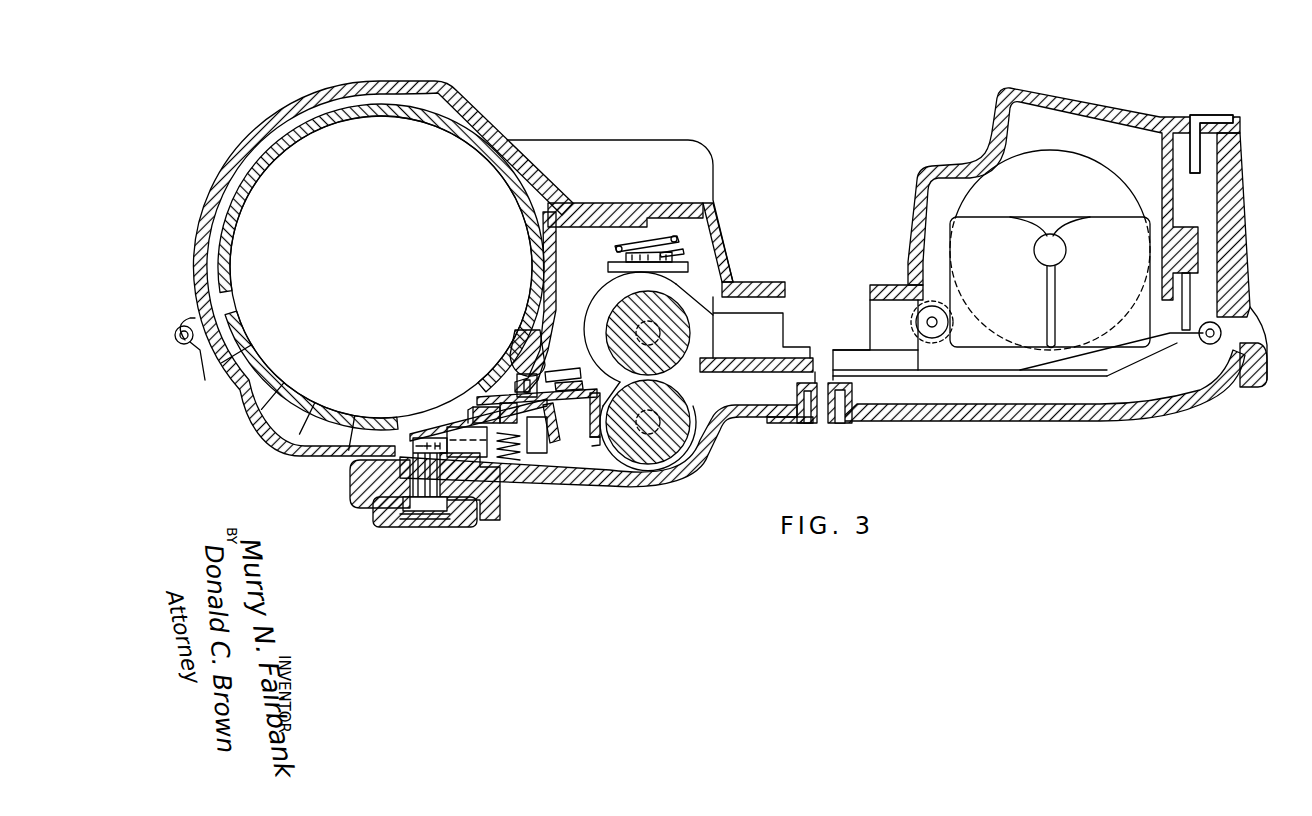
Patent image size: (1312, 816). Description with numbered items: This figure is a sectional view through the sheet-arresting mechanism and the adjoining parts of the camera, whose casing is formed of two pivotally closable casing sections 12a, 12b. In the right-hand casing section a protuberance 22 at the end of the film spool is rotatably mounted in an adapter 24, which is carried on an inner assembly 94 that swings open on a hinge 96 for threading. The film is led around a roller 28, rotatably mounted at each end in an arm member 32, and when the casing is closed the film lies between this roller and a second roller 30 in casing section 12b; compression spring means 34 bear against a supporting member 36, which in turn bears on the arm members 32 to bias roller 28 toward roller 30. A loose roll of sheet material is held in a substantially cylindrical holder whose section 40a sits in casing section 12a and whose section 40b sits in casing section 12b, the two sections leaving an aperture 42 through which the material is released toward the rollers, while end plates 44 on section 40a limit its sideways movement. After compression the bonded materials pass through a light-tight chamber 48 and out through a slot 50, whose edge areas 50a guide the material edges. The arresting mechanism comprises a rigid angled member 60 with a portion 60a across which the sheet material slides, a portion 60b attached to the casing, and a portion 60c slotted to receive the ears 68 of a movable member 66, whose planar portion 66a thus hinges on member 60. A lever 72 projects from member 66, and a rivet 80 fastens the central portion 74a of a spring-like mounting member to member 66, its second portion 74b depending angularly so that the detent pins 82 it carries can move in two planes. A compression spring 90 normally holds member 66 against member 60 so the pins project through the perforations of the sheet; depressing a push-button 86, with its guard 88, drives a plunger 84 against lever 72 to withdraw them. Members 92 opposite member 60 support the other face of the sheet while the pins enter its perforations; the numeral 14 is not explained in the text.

The casing section 12a is at (440, 86).
The casing section 12b is at (707, 452).
The hinge 14 is at (185, 326).
The protuberance 22 is at (1052, 234).
The adapter 24 is at (1109, 273).
The roller 28 is at (628, 314).
The roller 30 is at (680, 400).
The arm member 32 is at (608, 292).
The compression spring means 34 is at (614, 246).
The supporting member 36 is at (689, 267).
The holder section 40a is at (321, 124).
The holder section 40b is at (268, 426).
The aperture 42 is at (450, 398).
The end plate 44 is at (378, 241).
The light-tight chamber 48 is at (915, 392).
The slot 50 is at (1264, 322).
The edge area 50a is at (1243, 390).
The rigid angled member 60 is at (600, 470).
The portion 60a is at (501, 396).
The portion 60b is at (481, 522).
The portion 60c is at (472, 413).
The movable member 66 is at (597, 430).
The planar portion 66a is at (491, 406).
The ear 68 is at (470, 410).
The lever 72 is at (418, 432).
The central portion 74a is at (553, 446).
The second portion 74b is at (575, 440).
The rivet 80 is at (516, 372).
The detent pin 82 is at (546, 370).
The plunger 84 is at (445, 495).
The push-button 86 is at (387, 513).
The guard 88 is at (350, 482).
The compression spring 90 is at (512, 462).
The member 92 is at (570, 380).
The inner assembly 94 is at (982, 380).
The hinge 96 is at (1205, 345).